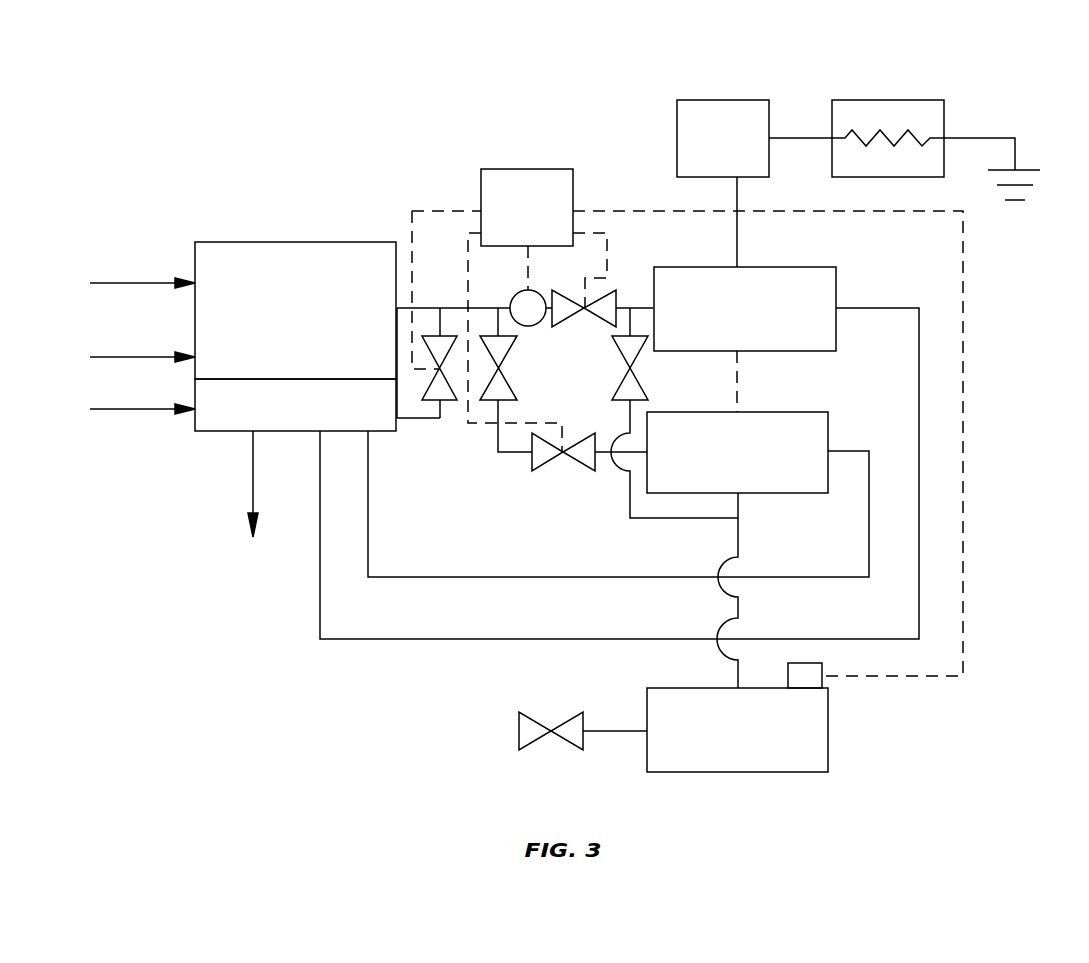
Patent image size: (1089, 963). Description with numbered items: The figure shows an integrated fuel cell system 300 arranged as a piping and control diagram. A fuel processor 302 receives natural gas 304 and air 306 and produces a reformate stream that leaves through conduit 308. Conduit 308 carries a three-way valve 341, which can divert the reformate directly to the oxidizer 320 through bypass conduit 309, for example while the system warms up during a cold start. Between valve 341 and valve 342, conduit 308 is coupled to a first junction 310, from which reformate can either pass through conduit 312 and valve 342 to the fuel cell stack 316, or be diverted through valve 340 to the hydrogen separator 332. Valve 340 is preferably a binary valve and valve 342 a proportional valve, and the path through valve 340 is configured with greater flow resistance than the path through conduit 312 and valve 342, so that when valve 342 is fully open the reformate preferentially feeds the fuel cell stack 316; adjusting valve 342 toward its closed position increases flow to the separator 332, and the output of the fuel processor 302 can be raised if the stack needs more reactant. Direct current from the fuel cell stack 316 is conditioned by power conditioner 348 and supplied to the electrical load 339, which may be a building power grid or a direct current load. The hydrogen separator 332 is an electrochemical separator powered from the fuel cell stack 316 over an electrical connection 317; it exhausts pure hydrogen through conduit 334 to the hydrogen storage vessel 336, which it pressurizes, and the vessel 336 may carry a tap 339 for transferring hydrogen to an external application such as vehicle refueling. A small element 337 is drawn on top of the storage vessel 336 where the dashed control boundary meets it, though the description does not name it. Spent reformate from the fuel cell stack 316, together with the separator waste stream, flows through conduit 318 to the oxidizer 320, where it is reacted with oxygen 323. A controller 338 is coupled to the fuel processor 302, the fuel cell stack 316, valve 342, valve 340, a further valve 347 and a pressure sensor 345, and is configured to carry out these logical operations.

The integrated fuel cell system 300 is at (983, 77).
The fuel processor 302 is at (295, 310).
The natural gas 304 is at (142, 272).
The air 306 is at (142, 346).
The conduit 308 is at (397, 307).
The bypass conduit 309 is at (415, 418).
The first junction 310 is at (440, 307).
The conduit 312 is at (548, 307).
The fuel cell stack 316 is at (619, 453).
The electrical connection 317 is at (737, 382).
The conduit 318 is at (867, 307).
The oxidizer 320 is at (295, 458).
The oxygen 323 is at (142, 399).
The hydrogen separator 332 is at (618, 494).
The conduit 334 is at (738, 506).
The hydrogen storage vessel 336 is at (737, 730).
The sensor 337 is at (822, 668).
The controller 338 is at (527, 207).
The electrical load 339 is at (880, 97).
The valve 340 is at (503, 363).
The 3-way valve 341 is at (447, 400).
The valve 342 is at (612, 293).
The pressure sensor 345 is at (532, 325).
The valve 347 is at (562, 453).
The power conditioner 348 is at (754, 183).